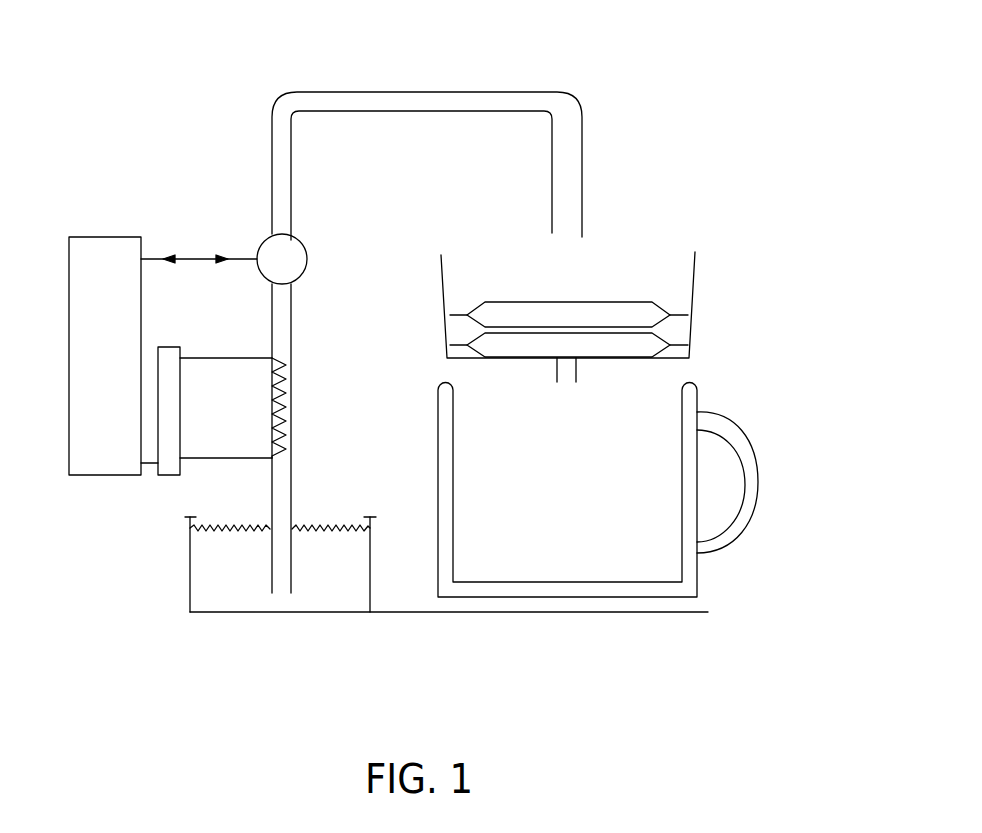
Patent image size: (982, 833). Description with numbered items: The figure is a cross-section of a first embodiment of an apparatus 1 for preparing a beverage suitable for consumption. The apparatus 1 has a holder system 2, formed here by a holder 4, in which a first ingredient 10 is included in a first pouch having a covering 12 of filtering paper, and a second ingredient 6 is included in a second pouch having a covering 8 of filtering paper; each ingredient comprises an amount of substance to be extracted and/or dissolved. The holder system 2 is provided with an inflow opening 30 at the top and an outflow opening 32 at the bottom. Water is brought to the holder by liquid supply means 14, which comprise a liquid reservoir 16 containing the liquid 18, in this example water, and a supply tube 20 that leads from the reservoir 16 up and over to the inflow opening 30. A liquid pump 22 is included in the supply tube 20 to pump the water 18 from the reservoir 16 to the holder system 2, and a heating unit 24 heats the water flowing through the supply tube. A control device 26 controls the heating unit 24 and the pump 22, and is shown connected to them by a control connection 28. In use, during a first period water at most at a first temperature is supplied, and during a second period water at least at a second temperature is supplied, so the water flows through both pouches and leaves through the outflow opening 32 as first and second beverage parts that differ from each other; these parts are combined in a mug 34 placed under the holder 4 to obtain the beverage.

The apparatus 1 is at (652, 680).
The holder system 2 is at (624, 274).
The holder 4 is at (695, 283).
The second ingredient 6 is at (657, 344).
The covering 8 is at (672, 362).
The first ingredient 10 is at (652, 312).
The covering 12 is at (645, 302).
The liquid supply means 14 is at (361, 84).
The liquid reservoir 16 is at (190, 575).
The liquid 18 is at (342, 587).
The supply tube 20 is at (272, 178).
The liquid pump 22 is at (262, 240).
The heating unit 24 is at (170, 463).
The control device 26 is at (87, 457).
The control line 28 is at (185, 257).
The inflow opening 30 is at (532, 231).
The outflow opening 32 is at (567, 385).
The mug 34 is at (697, 572).